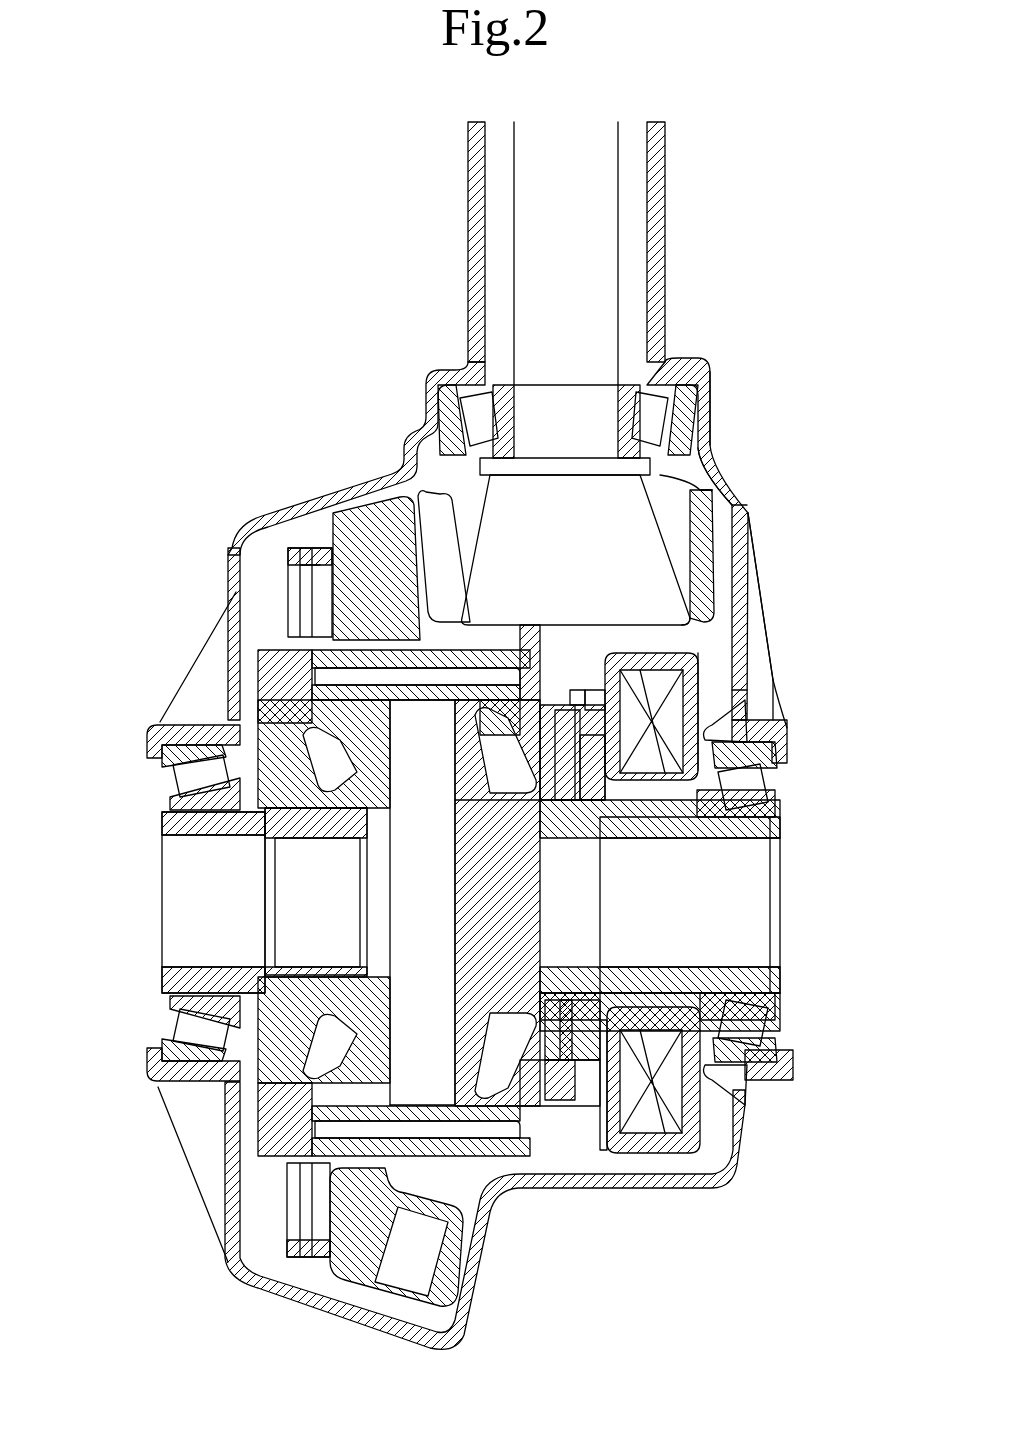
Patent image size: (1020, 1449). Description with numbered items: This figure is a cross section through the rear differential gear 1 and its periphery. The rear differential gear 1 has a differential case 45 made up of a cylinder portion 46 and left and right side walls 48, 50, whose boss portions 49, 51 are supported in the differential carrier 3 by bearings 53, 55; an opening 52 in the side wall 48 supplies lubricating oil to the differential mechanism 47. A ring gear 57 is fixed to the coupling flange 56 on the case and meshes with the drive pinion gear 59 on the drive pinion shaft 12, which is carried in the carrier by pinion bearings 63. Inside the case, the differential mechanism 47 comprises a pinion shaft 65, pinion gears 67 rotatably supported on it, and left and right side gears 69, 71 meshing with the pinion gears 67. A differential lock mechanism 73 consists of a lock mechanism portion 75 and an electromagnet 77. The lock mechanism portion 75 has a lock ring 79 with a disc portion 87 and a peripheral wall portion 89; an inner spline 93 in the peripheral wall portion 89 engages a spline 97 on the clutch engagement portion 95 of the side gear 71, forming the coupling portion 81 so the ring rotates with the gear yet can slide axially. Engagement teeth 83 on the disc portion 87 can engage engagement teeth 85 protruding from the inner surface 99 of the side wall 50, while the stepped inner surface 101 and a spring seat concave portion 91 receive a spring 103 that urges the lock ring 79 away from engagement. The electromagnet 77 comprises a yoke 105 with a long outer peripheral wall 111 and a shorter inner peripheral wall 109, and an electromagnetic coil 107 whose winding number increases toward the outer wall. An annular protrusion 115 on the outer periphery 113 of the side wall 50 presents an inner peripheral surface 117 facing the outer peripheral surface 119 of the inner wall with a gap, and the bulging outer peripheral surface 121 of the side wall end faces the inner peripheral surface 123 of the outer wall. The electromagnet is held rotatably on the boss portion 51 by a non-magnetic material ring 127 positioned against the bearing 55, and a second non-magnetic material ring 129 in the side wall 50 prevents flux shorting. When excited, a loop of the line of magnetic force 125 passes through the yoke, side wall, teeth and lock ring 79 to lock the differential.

The rear differential gear 1 is at (748, 525).
The differential carrier 3 is at (764, 541).
The drive pinion shaft 12 is at (548, 215).
The differential case 45 is at (592, 700).
The cylinder portion 46 is at (520, 690).
The differential mechanism 47 is at (490, 695).
The left side wall 48 is at (275, 695).
The boss portion 49 is at (160, 825).
The right side wall 50 is at (700, 650).
The boss portion 51 is at (778, 812).
The opening 52 is at (165, 1030).
The bearing 53 is at (160, 745).
The bearing 55 is at (790, 745).
The coupling flange 56 is at (268, 515).
The ring gear 57 is at (363, 530).
The drive pinion gear 59 is at (428, 440).
The pinion bearings 63 is at (432, 378).
The pinion shaft 65 is at (443, 770).
The pinion gears 67 is at (455, 793).
The side gear 69 is at (333, 835).
The side gear 71 is at (520, 805).
The differential lock mechanism 73 is at (702, 585).
The lock mechanism portion 75 is at (612, 690).
The electromagnet 77 is at (682, 624).
The lock ring 79 is at (562, 800).
The coupling portion 81 is at (576, 688).
The engagement teeth 83 is at (660, 460).
The engagement teeth 85 is at (690, 560).
The disc portion 87 is at (548, 800).
The peripheral wall portion 89 is at (598, 740).
The spring seat concave portion 91 is at (580, 805).
The inner spline 93 is at (560, 1110).
The clutch engagement portion 95 is at (458, 775).
The spline 97 is at (535, 1100).
The inner surface 99 is at (600, 1110).
The inner surface 101 is at (456, 950).
The spring 103 is at (628, 835).
The yoke 105 is at (655, 690).
The electromagnetic coil 107 is at (712, 645).
The inner peripheral wall 109 is at (770, 780).
The outer peripheral wall 111 is at (717, 595).
The outer periphery 113 is at (660, 1140).
The protrusion 115 is at (735, 1120).
The inner peripheral surface 117 is at (740, 992).
The outer peripheral surface 119 is at (722, 1120).
The outer peripheral surface 121 is at (622, 1125).
The inner peripheral surface 123 is at (670, 1150).
The line of magnetic force 125 is at (750, 700).
The non-magnetic material ring 127 is at (782, 822).
The non-magnetic material ring 129 is at (700, 965).